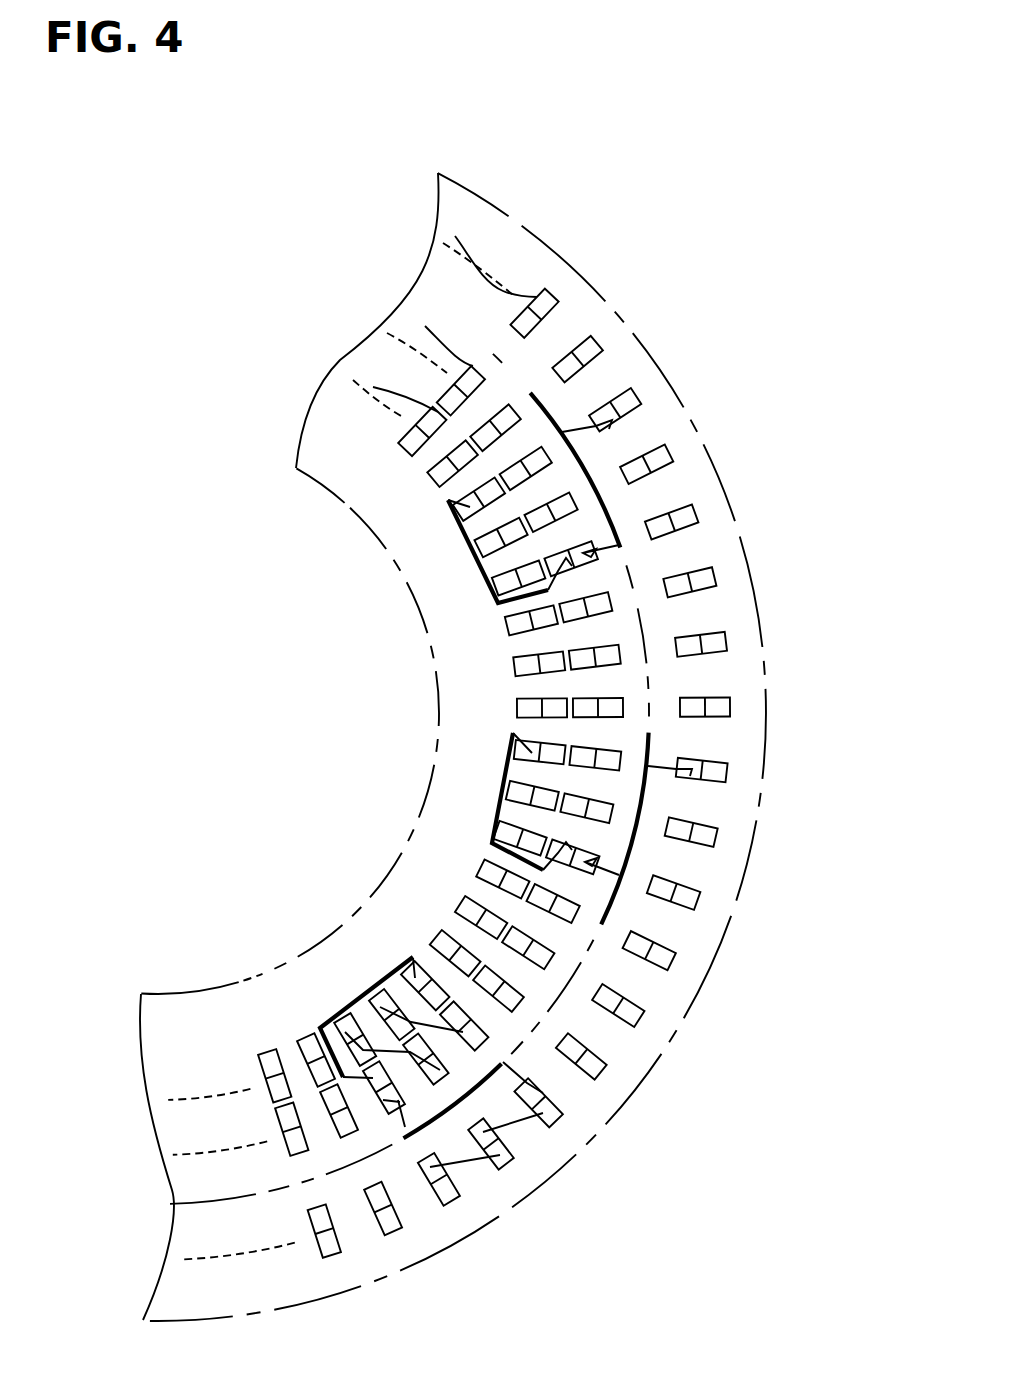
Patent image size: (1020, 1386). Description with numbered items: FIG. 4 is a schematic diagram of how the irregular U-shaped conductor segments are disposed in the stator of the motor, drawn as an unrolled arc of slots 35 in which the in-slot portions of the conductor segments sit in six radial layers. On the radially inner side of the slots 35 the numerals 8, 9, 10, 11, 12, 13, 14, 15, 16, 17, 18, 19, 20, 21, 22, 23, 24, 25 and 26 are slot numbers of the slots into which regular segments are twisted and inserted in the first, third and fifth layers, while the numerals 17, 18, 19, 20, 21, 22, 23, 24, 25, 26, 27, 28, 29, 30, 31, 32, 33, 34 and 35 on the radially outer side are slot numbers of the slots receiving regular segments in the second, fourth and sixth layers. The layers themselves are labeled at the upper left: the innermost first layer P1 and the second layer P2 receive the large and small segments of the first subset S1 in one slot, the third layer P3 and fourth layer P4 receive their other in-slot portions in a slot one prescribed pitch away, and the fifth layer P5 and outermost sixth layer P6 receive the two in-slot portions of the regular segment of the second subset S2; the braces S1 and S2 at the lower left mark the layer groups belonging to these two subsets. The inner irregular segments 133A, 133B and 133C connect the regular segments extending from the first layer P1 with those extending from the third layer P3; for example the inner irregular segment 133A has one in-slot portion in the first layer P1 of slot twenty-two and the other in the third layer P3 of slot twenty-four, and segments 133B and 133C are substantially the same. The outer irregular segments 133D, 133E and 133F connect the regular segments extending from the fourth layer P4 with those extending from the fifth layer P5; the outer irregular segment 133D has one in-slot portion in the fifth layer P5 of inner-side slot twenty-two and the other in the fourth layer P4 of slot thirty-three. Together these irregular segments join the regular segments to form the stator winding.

The slot number 8 is at (427, 424).
The slot number 9 is at (456, 457).
The slot number 10 is at (484, 492).
The slot number 11 is at (506, 531).
The slot number 12 is at (525, 572).
The slot number 13 is at (539, 617).
The slot number 14 is at (544, 664).
The slot number 15 is at (547, 710).
The slot number 16 is at (545, 752).
The slot number 17 is at (538, 533).
The slot number 18 is at (559, 585).
The slot number 19 is at (570, 639).
The slot number 20 is at (580, 695).
The slot number 21 is at (583, 747).
The slot number 22 is at (580, 802).
The slot number 23 is at (570, 854).
The slot number 24 is at (558, 903).
The slot number 25 is at (538, 948).
The slot number 26 is at (512, 986).
The slot number 27 is at (707, 902).
The slot number 28 is at (683, 962).
The slot number 29 is at (648, 1020).
The slot number 30 is at (611, 1077).
The slot number 31 is at (563, 1126).
The slot number 32 is at (510, 1172).
The slot number 33 is at (456, 1209).
The slot number 34 is at (398, 1239).
The slots 35 is at (335, 1265).
The first layer P1 is at (353, 380).
The second layer P2 is at (373, 387).
The third layer P3 is at (387, 333).
The fourth layer P4 is at (425, 326).
The fifth layer P5 is at (443, 243).
The sixth layer P6 is at (455, 236).
The inner irregular segment 133A is at (320, 1027).
The inner irregular segment 133B is at (495, 808).
The inner irregular segment 133C is at (483, 577).
The outer irregular segment 133D is at (482, 1082).
The outer irregular segment 133E is at (630, 845).
The outer irregular segment 133F is at (610, 513).
The first subset S1 is at (142, 1068).
The second subset S2 is at (143, 1213).